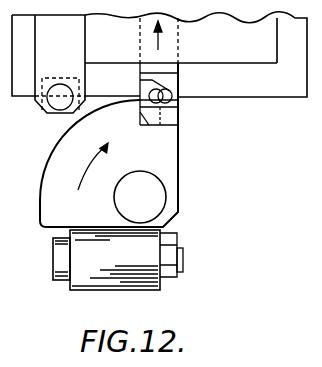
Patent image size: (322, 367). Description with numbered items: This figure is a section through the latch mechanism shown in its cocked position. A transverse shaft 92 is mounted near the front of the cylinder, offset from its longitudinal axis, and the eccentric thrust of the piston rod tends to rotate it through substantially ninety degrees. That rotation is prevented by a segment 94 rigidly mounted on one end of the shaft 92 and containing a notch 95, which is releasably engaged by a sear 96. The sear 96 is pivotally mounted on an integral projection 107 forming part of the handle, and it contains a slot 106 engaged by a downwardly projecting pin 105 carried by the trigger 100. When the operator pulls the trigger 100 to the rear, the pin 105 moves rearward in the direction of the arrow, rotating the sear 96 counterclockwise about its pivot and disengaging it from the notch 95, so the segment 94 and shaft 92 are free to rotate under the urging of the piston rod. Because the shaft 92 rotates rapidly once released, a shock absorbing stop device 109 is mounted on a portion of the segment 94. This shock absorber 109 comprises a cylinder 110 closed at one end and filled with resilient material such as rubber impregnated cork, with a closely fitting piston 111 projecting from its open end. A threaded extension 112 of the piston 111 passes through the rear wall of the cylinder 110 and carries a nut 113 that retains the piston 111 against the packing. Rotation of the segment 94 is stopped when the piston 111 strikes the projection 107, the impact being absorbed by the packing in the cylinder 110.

The trigger 100 is at (162, 33).
The pin 105 is at (168, 92).
The slot 106 is at (151, 95).
The projection 107 is at (46, 111).
The sear 96 is at (179, 102).
The notch 95 is at (143, 119).
The segment 94 is at (179, 147).
The transverse shaft 92 is at (152, 190).
The nut 113 is at (168, 238).
The threaded extension 112 is at (183, 258).
The piston 111 is at (63, 278).
The cylinder 110 is at (128, 280).
The shock absorbing stop device 109 is at (160, 297).